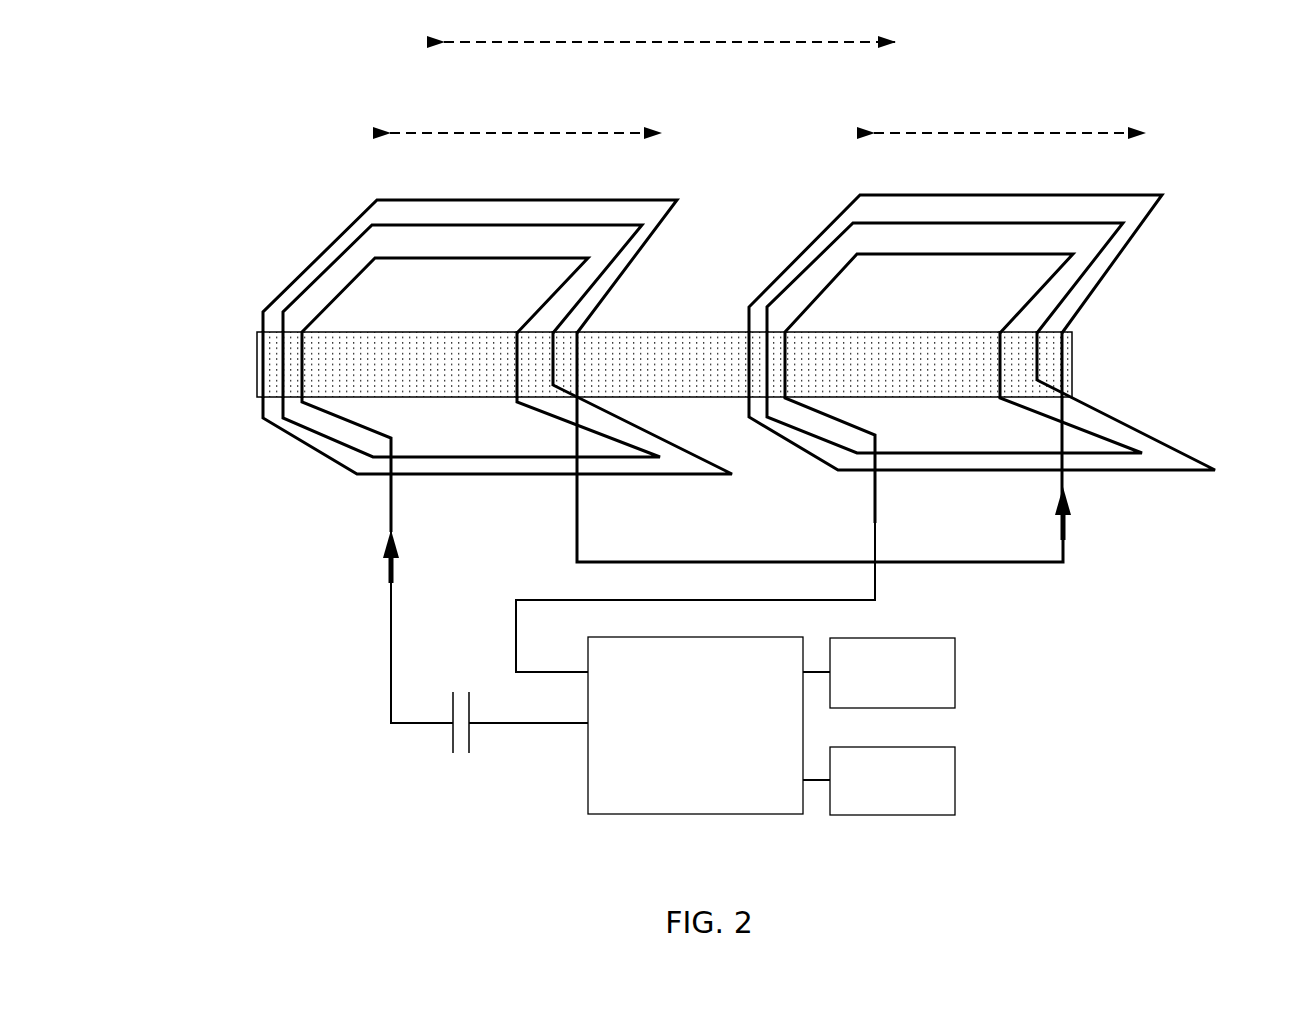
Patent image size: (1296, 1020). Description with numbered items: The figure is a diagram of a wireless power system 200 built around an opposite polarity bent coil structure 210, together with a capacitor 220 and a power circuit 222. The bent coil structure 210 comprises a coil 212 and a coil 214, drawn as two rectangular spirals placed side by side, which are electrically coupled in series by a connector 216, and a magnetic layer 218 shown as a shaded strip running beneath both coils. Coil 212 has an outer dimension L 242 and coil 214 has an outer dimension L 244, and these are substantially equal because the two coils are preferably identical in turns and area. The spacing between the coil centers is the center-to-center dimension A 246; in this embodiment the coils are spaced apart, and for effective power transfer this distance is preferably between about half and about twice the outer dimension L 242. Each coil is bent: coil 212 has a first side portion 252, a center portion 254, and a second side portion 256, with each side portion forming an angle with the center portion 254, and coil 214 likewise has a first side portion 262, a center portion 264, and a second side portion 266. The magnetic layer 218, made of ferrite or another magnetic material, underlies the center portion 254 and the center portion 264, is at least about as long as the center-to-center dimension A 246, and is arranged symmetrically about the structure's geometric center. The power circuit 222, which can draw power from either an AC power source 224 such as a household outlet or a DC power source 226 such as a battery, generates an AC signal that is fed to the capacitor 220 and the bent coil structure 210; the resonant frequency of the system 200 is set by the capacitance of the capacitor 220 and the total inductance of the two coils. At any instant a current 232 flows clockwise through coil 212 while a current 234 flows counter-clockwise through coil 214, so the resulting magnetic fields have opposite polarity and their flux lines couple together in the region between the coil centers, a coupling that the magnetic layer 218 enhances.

The wireless power system 200 is at (300, 798).
The opposite polarity bent coil structure 210 is at (233, 245).
The coil 212 is at (268, 452).
The coil 214 is at (1188, 492).
The connector 216 is at (983, 567).
The magnetic layer 218 is at (643, 332).
The capacitor 220 is at (453, 747).
The power circuit 222 is at (643, 815).
The AC power source 224 is at (955, 688).
The DC power source 226 is at (955, 797).
The current 232 is at (393, 558).
The current 234 is at (1060, 515).
The outer dimension L 242 is at (430, 133).
The outer dimension L 244 is at (1107, 133).
The center-to-center dimension A 246 is at (747, 43).
The first side portion 252 is at (317, 250).
The center portion 254 is at (257, 337).
The second side portion 256 is at (332, 460).
The first side portion 262 is at (1123, 252).
The center portion 264 is at (1062, 360).
The second side portion 266 is at (1125, 470).